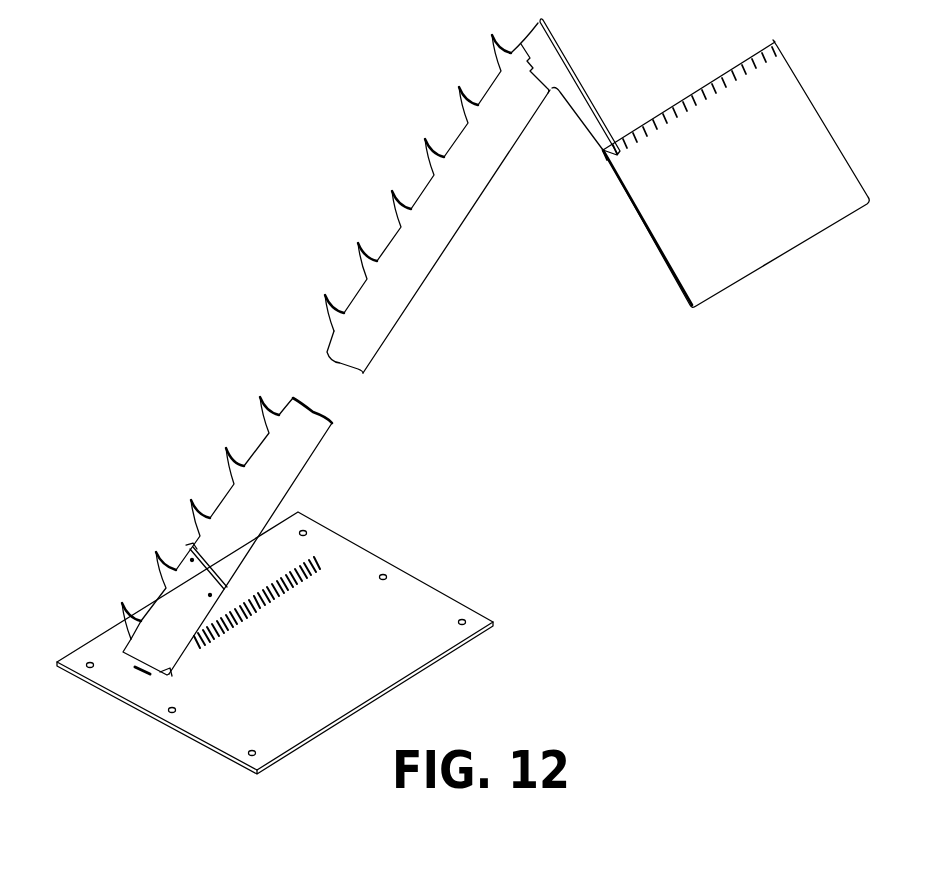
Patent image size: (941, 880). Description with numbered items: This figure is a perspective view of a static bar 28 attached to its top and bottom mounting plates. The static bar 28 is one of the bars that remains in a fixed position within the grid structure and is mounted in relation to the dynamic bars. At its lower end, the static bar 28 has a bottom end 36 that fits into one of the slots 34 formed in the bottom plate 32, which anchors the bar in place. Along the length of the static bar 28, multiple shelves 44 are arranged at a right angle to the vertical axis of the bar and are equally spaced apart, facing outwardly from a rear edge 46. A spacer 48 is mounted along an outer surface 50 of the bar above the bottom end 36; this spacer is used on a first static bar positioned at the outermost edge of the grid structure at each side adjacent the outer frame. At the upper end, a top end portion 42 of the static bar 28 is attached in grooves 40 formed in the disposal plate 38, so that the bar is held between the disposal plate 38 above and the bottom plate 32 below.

The static bar 28 is at (383, 323).
The bottom plate 32 is at (428, 603).
The slots 34 is at (270, 618).
The bottom end 36 is at (172, 671).
The disposal plate 38 is at (817, 150).
The grooves 40 is at (645, 117).
The top end portion 42 is at (592, 120).
The shelves 44 is at (338, 297).
The rear edge 46 is at (455, 235).
The spacer 48 is at (158, 627).
The outer surface 50 is at (302, 445).